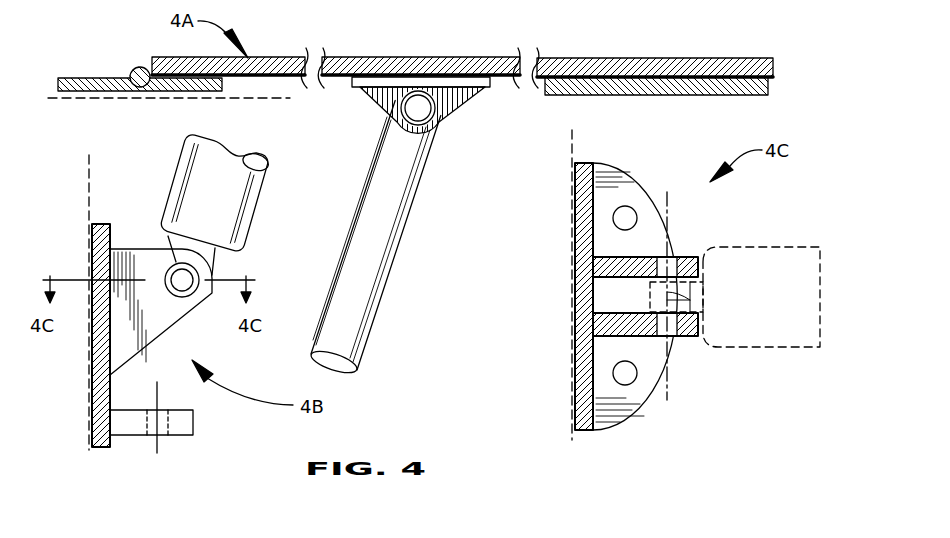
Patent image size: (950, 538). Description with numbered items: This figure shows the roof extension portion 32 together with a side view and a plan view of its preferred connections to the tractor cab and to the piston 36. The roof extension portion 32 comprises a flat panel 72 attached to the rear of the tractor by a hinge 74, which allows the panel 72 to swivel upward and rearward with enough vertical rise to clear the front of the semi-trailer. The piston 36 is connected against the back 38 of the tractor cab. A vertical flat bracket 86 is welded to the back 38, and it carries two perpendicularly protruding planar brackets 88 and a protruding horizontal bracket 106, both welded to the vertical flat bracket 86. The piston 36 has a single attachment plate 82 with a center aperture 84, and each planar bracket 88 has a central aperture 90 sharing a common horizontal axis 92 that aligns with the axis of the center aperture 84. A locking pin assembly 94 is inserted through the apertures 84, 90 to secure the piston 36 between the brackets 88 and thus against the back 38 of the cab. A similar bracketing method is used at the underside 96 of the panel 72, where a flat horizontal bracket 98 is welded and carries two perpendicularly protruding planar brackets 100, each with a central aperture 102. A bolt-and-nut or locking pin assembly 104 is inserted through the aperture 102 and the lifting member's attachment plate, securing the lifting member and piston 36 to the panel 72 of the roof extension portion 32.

The roof extension portion 32 is at (453, 38).
The piston 36 is at (387, 273).
The back of the tractor cab 38 is at (92, 176).
The flat panel 72 is at (343, 56).
The hinge 74 is at (130, 67).
The attachment plate 82 is at (220, 268).
The center aperture 84 is at (700, 265).
The vertical flat bracket 86 is at (113, 395).
The protruding planar brackets 88 is at (170, 332).
The central aperture 90 is at (677, 256).
The common horizontal axis 92 is at (667, 192).
The locking pin assembly 94 is at (165, 272).
The underside of the panel 96 is at (505, 80).
The flat horizontal bracket 98 is at (484, 90).
The protruding planar brackets 100 is at (378, 102).
The central aperture 102 is at (424, 114).
The locking pin assembly 104 is at (387, 113).
The protruding horizontal bracket 106 is at (193, 422).